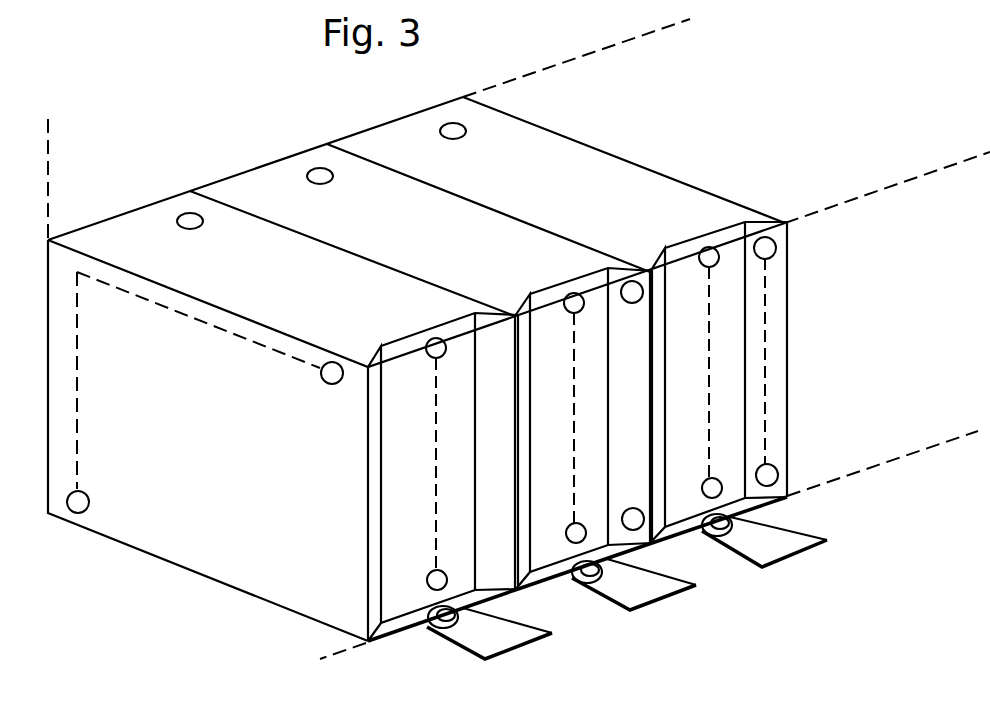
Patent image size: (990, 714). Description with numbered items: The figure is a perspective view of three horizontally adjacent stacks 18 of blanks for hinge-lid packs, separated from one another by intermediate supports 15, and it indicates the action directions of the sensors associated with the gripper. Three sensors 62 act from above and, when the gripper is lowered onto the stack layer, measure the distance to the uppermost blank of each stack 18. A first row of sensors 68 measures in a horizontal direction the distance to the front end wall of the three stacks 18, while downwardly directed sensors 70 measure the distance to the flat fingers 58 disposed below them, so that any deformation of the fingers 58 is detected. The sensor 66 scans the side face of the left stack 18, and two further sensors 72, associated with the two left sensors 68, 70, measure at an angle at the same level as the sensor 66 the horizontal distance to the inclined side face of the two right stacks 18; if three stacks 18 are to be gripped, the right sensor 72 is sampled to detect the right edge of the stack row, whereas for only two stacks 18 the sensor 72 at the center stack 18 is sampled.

The intermediate supports 15 is at (396, 627).
The individual stacks 18 is at (116, 232).
The flat fingers 58 is at (523, 637).
The sensors 62 is at (191, 221).
The sensor 66 is at (335, 384).
The sensors 68 is at (441, 578).
The sensors 70 is at (444, 624).
The sensors 72 is at (632, 296).